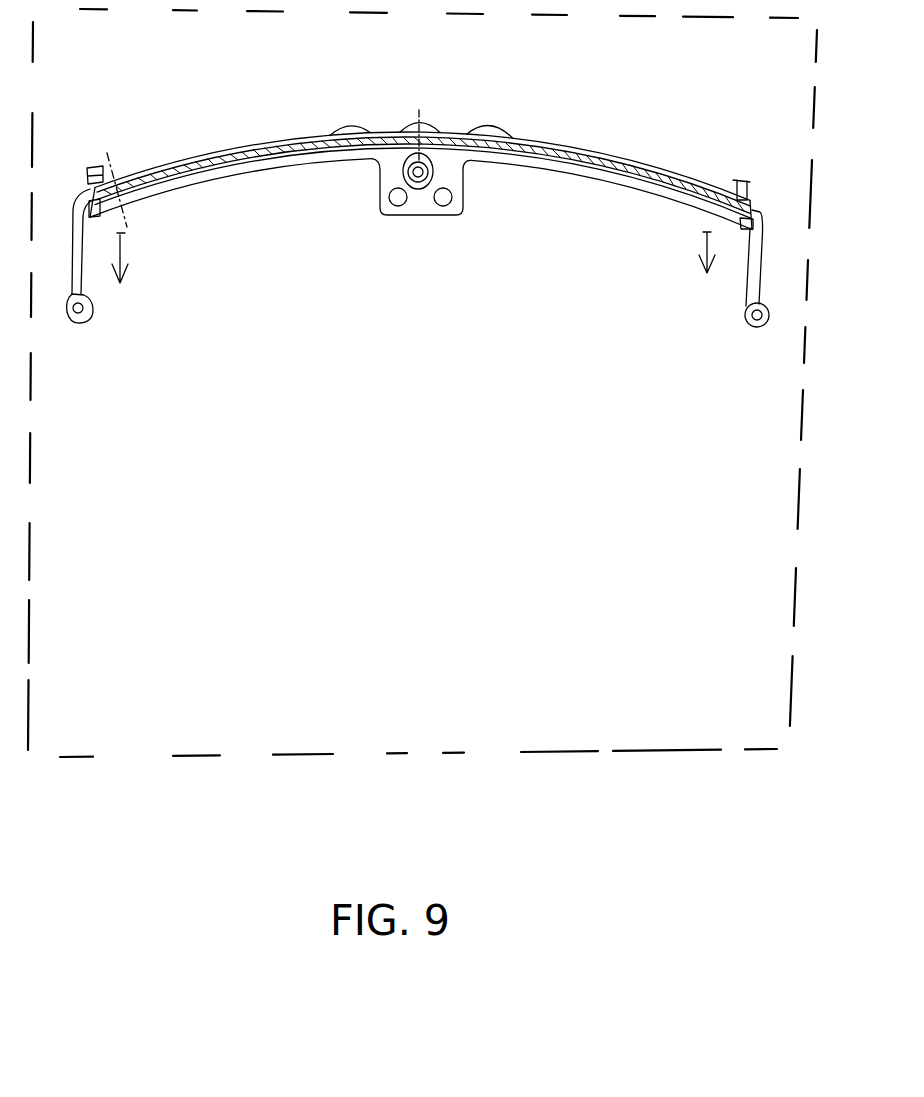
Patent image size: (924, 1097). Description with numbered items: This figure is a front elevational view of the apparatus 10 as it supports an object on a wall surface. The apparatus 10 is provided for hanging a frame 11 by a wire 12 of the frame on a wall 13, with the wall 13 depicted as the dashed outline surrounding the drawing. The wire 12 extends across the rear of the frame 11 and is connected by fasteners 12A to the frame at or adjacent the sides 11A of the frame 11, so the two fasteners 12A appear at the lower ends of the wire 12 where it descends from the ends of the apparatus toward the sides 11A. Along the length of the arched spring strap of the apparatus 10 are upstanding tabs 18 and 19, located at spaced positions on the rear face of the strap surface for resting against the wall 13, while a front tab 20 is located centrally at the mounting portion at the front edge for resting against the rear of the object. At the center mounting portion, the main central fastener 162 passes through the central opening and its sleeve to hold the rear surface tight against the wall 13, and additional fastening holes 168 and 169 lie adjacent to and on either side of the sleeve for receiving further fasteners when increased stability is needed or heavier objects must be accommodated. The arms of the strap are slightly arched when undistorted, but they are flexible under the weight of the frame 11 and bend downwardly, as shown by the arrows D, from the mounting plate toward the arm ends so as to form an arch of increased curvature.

The apparatus 10 is at (502, 245).
The frame 11 is at (588, 752).
The sides of the frame 11A is at (797, 426).
The wire 12 is at (747, 280).
The fasteners 12A is at (93, 313).
The wall 13 is at (418, 779).
The upstanding tab 18 is at (358, 127).
The upstanding tab 19 is at (492, 135).
The front tab 20 is at (443, 98).
The fastener 162 is at (418, 176).
The additional fastening hole 168 is at (388, 215).
The additional fastening hole 169 is at (443, 205).
The arrows D is at (121, 236).